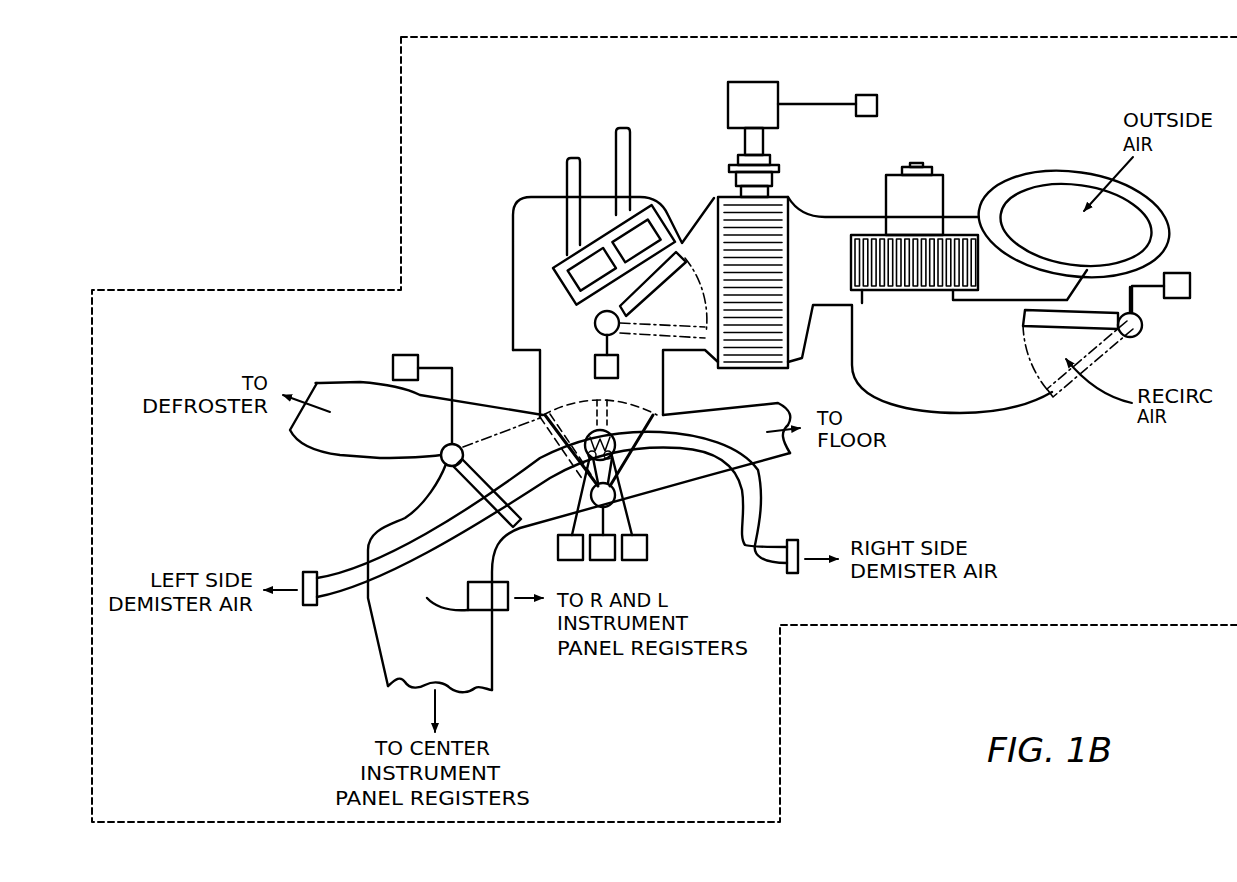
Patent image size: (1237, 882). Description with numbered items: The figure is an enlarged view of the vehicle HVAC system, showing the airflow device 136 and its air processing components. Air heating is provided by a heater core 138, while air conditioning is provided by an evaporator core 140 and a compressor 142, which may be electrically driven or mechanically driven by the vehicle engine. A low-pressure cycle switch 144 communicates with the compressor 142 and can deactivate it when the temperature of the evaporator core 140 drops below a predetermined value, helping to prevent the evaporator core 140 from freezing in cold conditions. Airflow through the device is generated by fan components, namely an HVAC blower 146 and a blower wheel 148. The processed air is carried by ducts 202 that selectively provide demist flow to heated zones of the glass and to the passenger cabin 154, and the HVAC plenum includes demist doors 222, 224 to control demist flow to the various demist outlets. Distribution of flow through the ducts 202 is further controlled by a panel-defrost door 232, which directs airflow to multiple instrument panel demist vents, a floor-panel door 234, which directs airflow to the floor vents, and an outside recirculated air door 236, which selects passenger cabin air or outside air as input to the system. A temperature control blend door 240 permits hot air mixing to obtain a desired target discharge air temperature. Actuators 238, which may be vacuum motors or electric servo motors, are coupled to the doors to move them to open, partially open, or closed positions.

The airflow device 136 is at (84, 316).
The heater core 138 is at (742, 232).
The evaporator core 140 is at (728, 101).
The compressor 142 is at (878, 100).
The low-pressure cycle switch 144 is at (893, 192).
The HVAC blower 146 is at (872, 252).
The blower wheel 148 is at (452, 488).
The passenger cabin 154 is at (245, 717).
The ducts 202 is at (768, 455).
The demist door 222 is at (547, 462).
The demist door 224 is at (640, 452).
The panel-defrost door 232 is at (628, 473).
The floor-panel door 234 is at (1105, 345).
The outside recirculated air door 236 is at (605, 310).
The actuators 238 is at (398, 355).
The temperature control blend door 240 is at (566, 284).